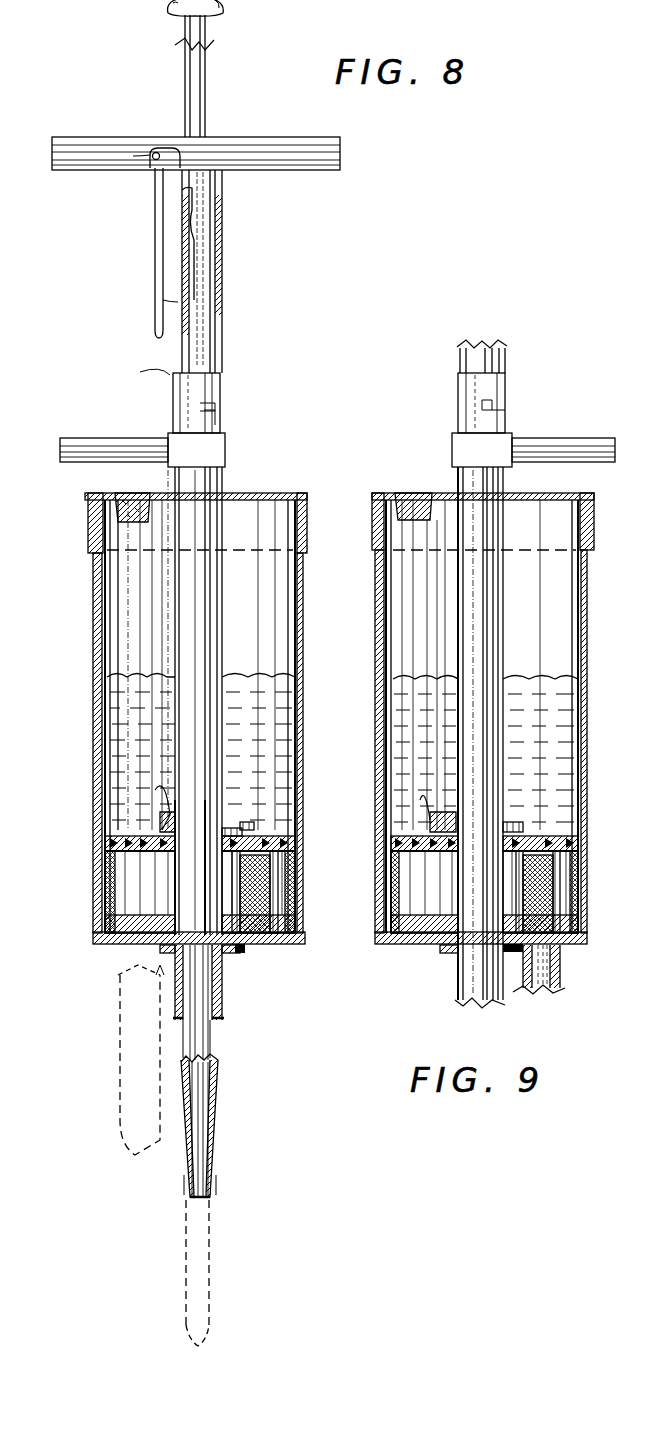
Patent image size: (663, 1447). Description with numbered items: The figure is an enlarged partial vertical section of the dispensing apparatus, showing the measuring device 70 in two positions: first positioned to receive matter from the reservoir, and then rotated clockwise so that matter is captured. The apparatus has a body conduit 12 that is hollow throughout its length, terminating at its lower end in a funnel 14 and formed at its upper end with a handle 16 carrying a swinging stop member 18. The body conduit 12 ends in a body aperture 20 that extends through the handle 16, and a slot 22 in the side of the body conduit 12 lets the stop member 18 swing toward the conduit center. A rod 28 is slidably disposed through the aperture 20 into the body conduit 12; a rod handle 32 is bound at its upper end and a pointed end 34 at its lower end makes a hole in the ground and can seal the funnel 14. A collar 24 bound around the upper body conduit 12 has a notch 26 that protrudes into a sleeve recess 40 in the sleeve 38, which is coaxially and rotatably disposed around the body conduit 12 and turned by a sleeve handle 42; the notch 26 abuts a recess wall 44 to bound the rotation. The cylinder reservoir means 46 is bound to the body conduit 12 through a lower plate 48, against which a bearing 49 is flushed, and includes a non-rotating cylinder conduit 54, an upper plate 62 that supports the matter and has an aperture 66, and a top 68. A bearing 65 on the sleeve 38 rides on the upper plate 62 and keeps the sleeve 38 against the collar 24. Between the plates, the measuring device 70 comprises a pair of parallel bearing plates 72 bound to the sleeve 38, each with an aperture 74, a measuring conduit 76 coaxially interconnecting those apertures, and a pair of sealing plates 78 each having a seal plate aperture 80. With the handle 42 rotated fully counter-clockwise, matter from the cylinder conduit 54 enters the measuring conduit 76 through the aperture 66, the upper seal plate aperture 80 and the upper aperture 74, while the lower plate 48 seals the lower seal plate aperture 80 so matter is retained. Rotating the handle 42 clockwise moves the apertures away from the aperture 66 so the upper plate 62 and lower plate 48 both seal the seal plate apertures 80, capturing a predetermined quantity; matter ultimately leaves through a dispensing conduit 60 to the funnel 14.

In FIG. 8, the body conduit 12 is at (213, 352).
In FIG. 9, the body conduit 12 is at (480, 346).
In FIG. 8, the funnel 14 is at (217, 1178).
In FIG. 8, the handle 16 is at (306, 148).
In FIG. 8, the swinging stop member 18 is at (157, 255).
In FIG. 8, the body aperture 20 is at (205, 146).
In FIG. 8, the slot 22 is at (190, 203).
In FIG. 8, the collar 24 is at (222, 396).
In FIG. 9, the collar 24 is at (486, 390).
In FIG. 8, the notch 26 is at (215, 405).
In FIG. 9, the notch 26 is at (486, 404).
In FIG. 8, the rod 28 is at (200, 92).
In FIG. 8, the rod handle 32 is at (160, 2).
In FIG. 8, the pointed end 34 is at (200, 1336).
In FIG. 8, the sleeve 38 is at (206, 478).
In FIG. 9, the sleeve 38 is at (494, 480).
In FIG. 8, the sleeve recess 40 is at (215, 423).
In FIG. 9, the sleeve recess 40 is at (506, 424).
In FIG. 8, the sleeve handle 42 is at (95, 451).
In FIG. 9, the sleeve handle 42 is at (570, 446).
In FIG. 8, the recess wall 44 is at (186, 405).
In FIG. 9, the recess wall 44 is at (480, 405).
In FIG. 8, the cylinder reservoir means 46 is at (313, 575).
In FIG. 9, the cylinder reservoir means 46 is at (367, 575).
In FIG. 8, the lower plate 48 is at (116, 945).
In FIG. 9, the lower plate 48 is at (432, 946).
In FIG. 8, the bearing 49 is at (240, 950).
In FIG. 9, the bearing 49 is at (440, 962).
In FIG. 8, the cylinder conduit 54 is at (300, 748).
In FIG. 9, the cylinder conduit 54 is at (590, 695).
In FIG. 8, the dispensing conduit 60 is at (118, 1100).
In FIG. 9, the dispensing conduit 60 is at (550, 990).
In FIG. 8, the upper plate 62 is at (130, 826).
In FIG. 9, the upper plate 62 is at (412, 834).
In FIG. 8, the bearing 65 is at (105, 812).
In FIG. 9, the bearing 65 is at (548, 806).
In FIG. 8, the aperture 66 is at (255, 828).
In FIG. 8, the top 68 is at (282, 495).
In FIG. 9, the top 68 is at (450, 495).
In FIG. 8, the measuring device 70 is at (120, 494).
In FIG. 9, the measuring device 70 is at (412, 458).
In FIG. 8, the bearing plate 72 is at (118, 868).
In FIG. 9, the bearing plate 72 is at (402, 866).
In FIG. 8, the aperture 74 is at (297, 862).
In FIG. 9, the aperture 74 is at (584, 846).
In FIG. 8, the measuring conduit 76 is at (290, 905).
In FIG. 9, the measuring conduit 76 is at (586, 872).
In FIG. 8, the sealing plate 78 is at (120, 848).
In FIG. 9, the sealing plate 78 is at (412, 802).
In FIG. 8, the seal plate aperture 80 is at (255, 830).
In FIG. 9, the seal plate aperture 80 is at (556, 826).